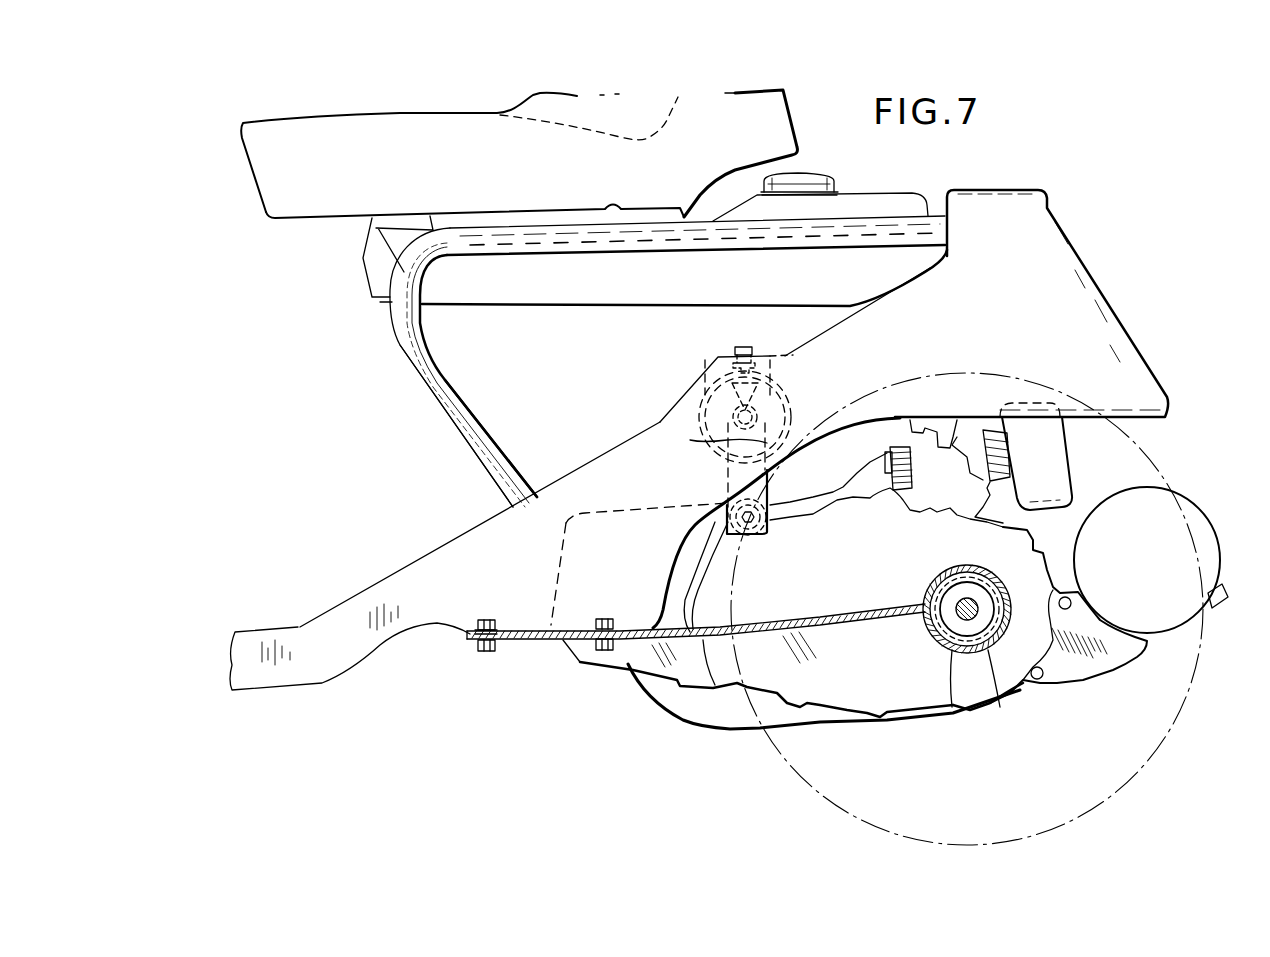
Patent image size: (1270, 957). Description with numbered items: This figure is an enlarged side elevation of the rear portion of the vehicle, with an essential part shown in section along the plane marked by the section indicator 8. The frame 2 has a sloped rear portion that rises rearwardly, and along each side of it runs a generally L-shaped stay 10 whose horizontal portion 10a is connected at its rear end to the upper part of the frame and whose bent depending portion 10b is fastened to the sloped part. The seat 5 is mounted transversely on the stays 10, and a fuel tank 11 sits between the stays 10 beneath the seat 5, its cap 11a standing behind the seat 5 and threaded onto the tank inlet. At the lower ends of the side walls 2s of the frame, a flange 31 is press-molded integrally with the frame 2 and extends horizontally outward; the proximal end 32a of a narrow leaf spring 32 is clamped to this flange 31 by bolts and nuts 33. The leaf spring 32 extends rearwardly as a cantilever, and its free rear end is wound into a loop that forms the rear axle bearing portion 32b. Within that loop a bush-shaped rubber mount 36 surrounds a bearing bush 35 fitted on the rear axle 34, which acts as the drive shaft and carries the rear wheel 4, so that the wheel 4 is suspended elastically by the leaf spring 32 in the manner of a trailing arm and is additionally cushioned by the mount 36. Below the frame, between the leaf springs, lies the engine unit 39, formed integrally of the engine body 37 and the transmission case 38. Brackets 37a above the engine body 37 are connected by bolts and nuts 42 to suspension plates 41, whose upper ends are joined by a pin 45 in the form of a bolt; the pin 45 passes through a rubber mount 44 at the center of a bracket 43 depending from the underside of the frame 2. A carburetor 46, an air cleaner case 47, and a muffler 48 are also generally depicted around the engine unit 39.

The frame 2 is at (583, 467).
The side wall 2s is at (537, 572).
The rear wheel 4 is at (1143, 767).
The seat 5 is at (327, 208).
The section line 8- 8 is at (742, 470).
The stay 10 is at (405, 329).
The horizontal portion 10a is at (855, 226).
The bent depending portion 10b is at (450, 407).
The fuel tank 11 is at (653, 298).
The cap 11a is at (813, 182).
The flange 31 is at (525, 625).
The leaf spring 32 is at (640, 666).
The proximal end 32a is at (563, 646).
The rear axle bearing portion 32b is at (957, 653).
The bolts and nuts 33 is at (487, 655).
The rear axle 34 is at (958, 618).
The bearing bush 35 is at (1001, 583).
The rubber mount 36 is at (997, 705).
The engine body 37 is at (693, 677).
The bracket 37a is at (697, 530).
The transmission case 38 is at (828, 694).
The engine unit 39 is at (771, 672).
The suspension plate 41 is at (760, 507).
The bolts and nuts 42 is at (770, 520).
The bracket 43 is at (698, 412).
The rubber mount 44 is at (727, 437).
The pin 45 is at (748, 410).
The carburetor 46 is at (927, 437).
The air cleaner case 47 is at (1050, 462).
The muffler 48 is at (1172, 532).